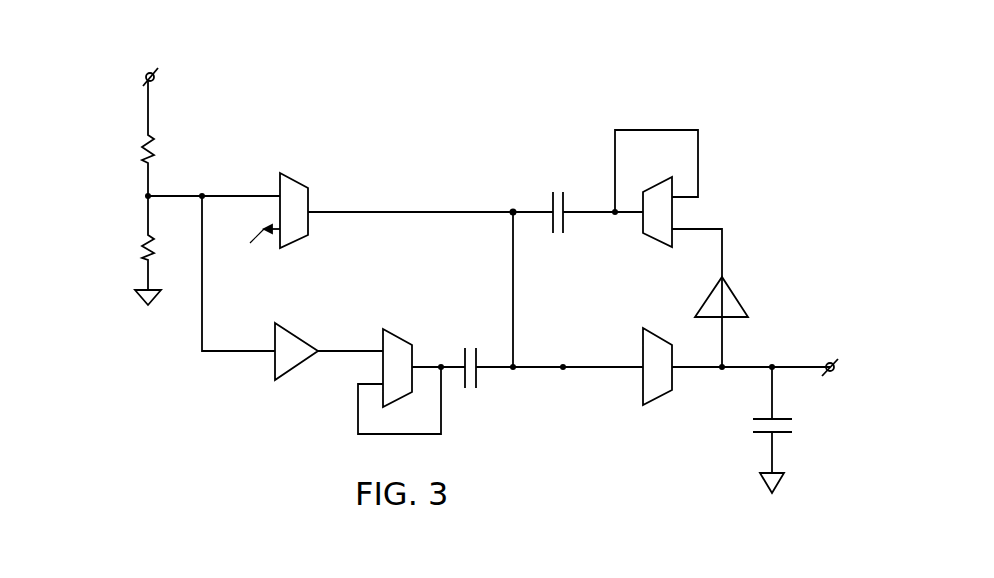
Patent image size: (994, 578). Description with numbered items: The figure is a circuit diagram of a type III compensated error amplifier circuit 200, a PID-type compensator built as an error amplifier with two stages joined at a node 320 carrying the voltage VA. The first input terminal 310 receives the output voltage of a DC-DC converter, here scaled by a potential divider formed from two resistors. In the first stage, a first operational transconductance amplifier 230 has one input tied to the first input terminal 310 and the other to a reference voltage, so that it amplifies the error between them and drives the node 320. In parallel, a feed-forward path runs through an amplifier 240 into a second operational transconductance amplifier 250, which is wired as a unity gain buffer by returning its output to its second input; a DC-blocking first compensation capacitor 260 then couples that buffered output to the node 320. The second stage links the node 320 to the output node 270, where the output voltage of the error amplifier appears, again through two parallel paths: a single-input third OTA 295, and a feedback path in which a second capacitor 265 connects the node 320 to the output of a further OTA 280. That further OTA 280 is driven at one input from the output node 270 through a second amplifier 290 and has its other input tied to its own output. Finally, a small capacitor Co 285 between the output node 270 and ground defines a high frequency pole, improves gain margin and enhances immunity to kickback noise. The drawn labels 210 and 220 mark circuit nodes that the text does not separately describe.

The type III compensated error amplifier circuit 200 is at (714, 114).
The divided output voltage node 210 is at (203, 216).
The node VA 220 is at (512, 211).
The first operational transconductance amplifier 230 is at (309, 197).
The amplifier 240 is at (275, 363).
The second operational transconductance amplifier 250 is at (383, 338).
The first compensation capacitor 260 is at (478, 390).
The second capacitor 265 is at (553, 192).
The output node 270 is at (828, 361).
The further OTA 280 is at (648, 248).
The capacitor Co 285 is at (790, 435).
The second amplifier 290 is at (729, 283).
The third OTA 295 is at (655, 400).
The first input terminal 310 is at (123, 190).
The node 320 is at (312, 191).